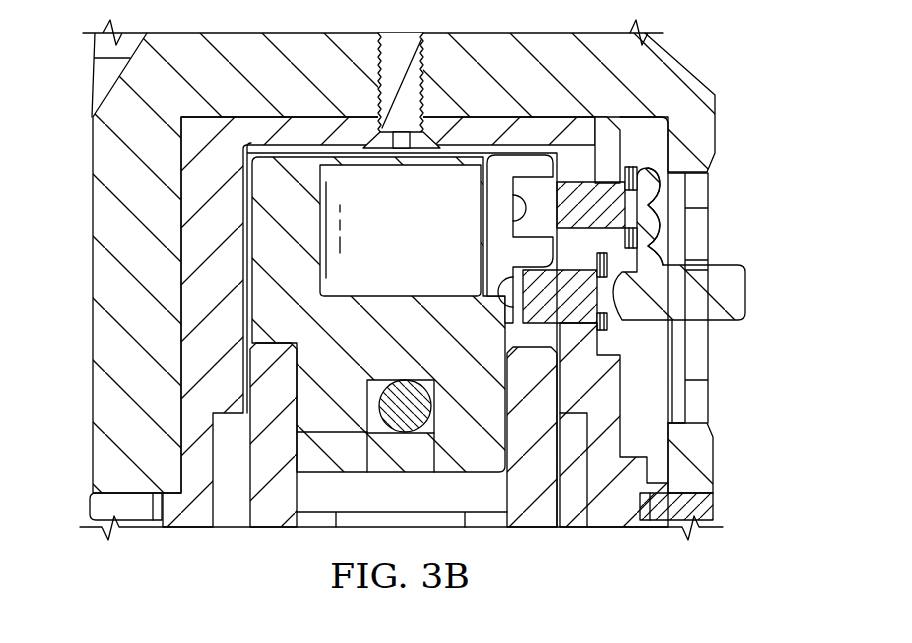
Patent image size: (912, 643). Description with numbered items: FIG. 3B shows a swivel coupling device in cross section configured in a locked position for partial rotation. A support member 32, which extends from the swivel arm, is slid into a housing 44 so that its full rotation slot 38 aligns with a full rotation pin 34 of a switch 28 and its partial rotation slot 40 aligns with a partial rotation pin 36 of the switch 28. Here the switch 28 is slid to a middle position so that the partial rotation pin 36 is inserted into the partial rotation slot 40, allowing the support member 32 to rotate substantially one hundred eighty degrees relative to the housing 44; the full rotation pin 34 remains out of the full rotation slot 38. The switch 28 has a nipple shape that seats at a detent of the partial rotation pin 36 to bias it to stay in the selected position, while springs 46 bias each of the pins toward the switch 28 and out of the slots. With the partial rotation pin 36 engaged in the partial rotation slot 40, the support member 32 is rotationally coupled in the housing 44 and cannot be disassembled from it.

The switch 28 is at (723, 307).
The support member 32 is at (393, 317).
The full rotation pin 34 is at (647, 186).
The partial rotation pin 36 is at (660, 280).
The full rotation slot 38 is at (498, 200).
The partial rotation slot 40 is at (500, 285).
The housing 44 is at (97, 273).
The springs 46 is at (627, 167).